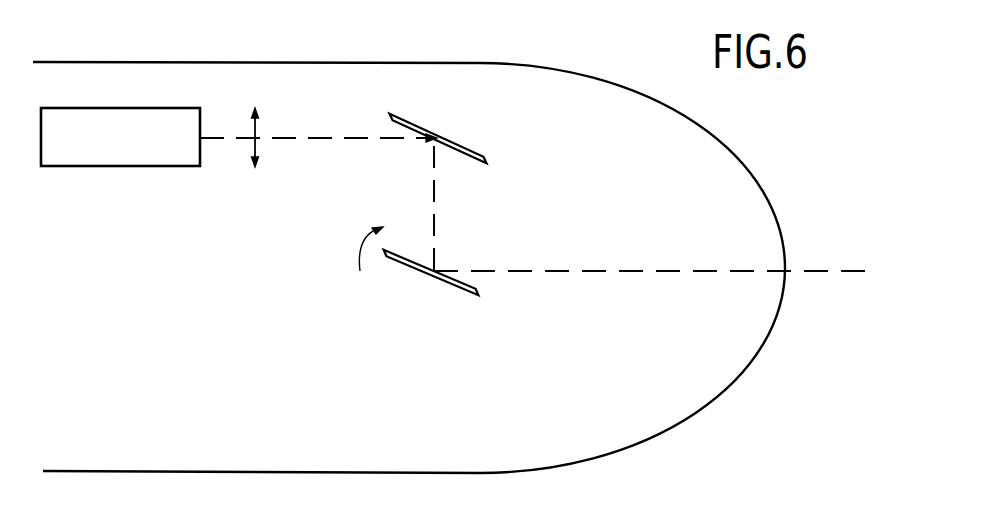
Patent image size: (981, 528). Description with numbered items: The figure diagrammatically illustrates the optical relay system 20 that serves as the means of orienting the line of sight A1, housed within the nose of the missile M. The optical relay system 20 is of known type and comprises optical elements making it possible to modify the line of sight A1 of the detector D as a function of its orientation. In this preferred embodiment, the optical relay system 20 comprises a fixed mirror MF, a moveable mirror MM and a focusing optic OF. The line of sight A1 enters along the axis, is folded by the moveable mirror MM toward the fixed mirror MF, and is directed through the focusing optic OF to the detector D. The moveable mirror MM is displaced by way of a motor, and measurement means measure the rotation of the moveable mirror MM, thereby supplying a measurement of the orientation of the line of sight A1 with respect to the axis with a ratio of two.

The missile M is at (713, 407).
The detector D is at (100, 168).
The focusing optic OF is at (257, 143).
The optical relay system 20 is at (334, 194).
The fixed mirror MF is at (458, 143).
The moveable mirror MM is at (440, 283).
The line of sight A1 is at (722, 270).